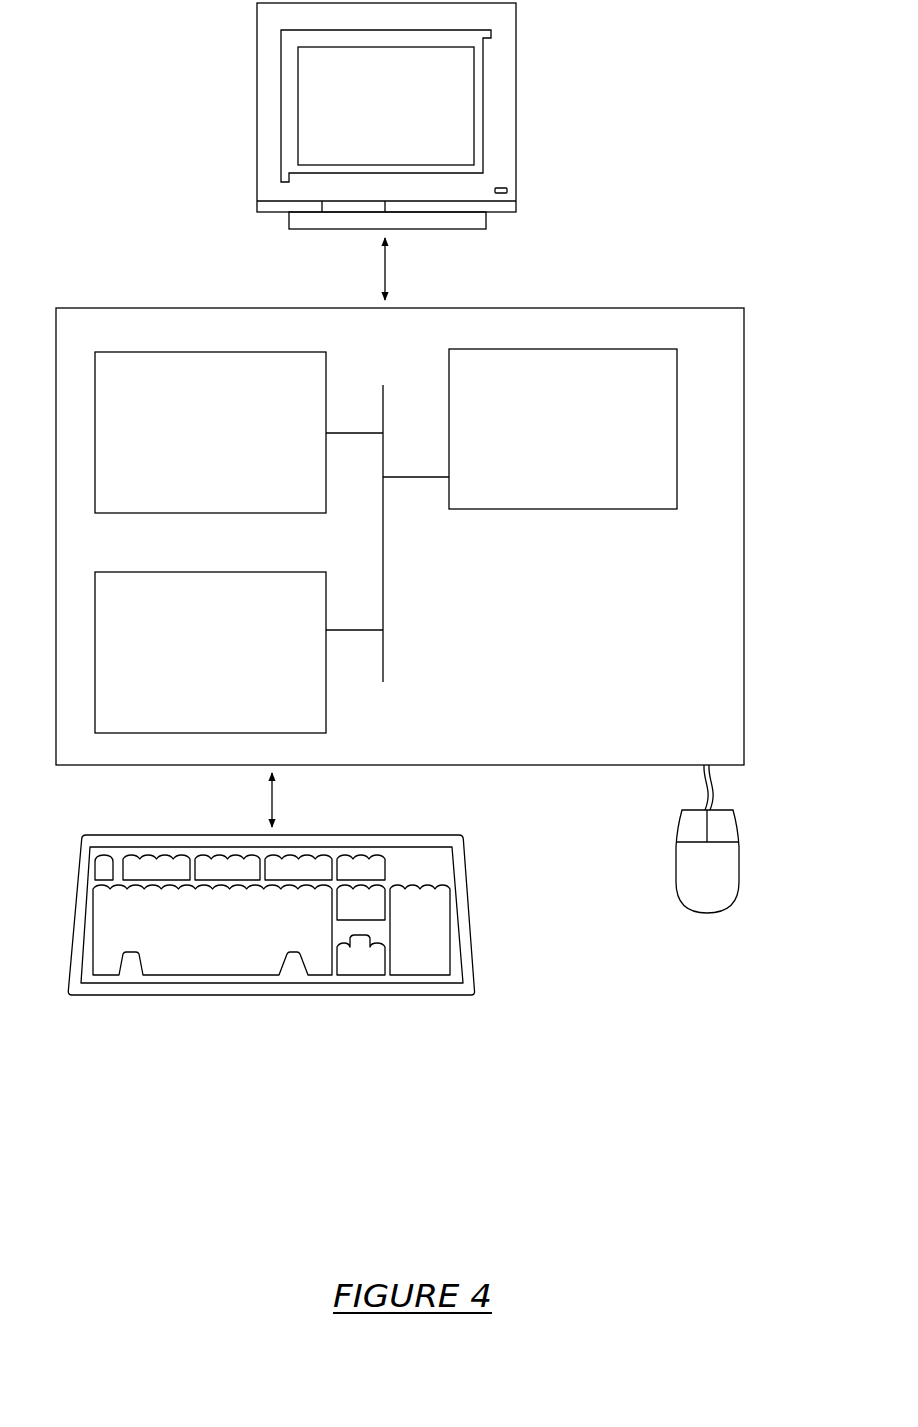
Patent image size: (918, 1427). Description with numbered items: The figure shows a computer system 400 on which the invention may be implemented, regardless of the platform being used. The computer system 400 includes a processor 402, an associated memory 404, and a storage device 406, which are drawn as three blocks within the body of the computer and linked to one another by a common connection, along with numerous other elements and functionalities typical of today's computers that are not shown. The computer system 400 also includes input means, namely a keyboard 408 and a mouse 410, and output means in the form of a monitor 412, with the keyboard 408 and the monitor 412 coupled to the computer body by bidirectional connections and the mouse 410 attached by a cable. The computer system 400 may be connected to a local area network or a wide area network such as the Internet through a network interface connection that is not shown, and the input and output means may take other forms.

The computer system 400 is at (722, 175).
The processor 402 is at (600, 439).
The memory 404 is at (231, 442).
The storage device 406 is at (228, 662).
The keyboard 408 is at (223, 952).
The mouse 410 is at (727, 882).
The monitor 412 is at (405, 119).